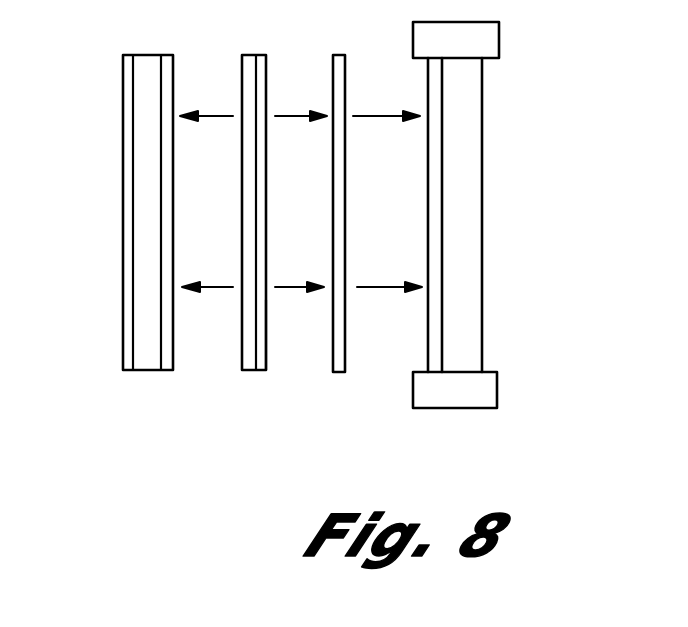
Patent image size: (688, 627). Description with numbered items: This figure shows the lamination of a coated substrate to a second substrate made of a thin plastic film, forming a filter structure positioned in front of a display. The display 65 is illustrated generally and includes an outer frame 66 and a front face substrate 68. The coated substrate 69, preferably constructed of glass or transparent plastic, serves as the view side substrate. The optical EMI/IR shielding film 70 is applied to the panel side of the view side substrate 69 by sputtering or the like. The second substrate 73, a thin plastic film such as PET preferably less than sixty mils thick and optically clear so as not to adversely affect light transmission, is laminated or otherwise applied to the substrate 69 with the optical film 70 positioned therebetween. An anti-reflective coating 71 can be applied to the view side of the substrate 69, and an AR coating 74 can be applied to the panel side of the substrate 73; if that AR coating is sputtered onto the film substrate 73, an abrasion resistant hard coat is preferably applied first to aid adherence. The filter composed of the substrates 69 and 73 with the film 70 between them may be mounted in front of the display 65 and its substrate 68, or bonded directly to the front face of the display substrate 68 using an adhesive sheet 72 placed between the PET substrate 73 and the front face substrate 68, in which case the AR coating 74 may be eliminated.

The display 65 is at (471, 229).
The outer frame 66 is at (499, 44).
The front face substrate 68 is at (426, 334).
The substrate 69 is at (150, 271).
The optical EMI/IR shielding film 70 is at (173, 57).
The anti-reflective coating 71 is at (123, 227).
The adhesive sheet 72 is at (345, 59).
The second substrate 73 is at (251, 87).
The AR coating 74 is at (263, 330).